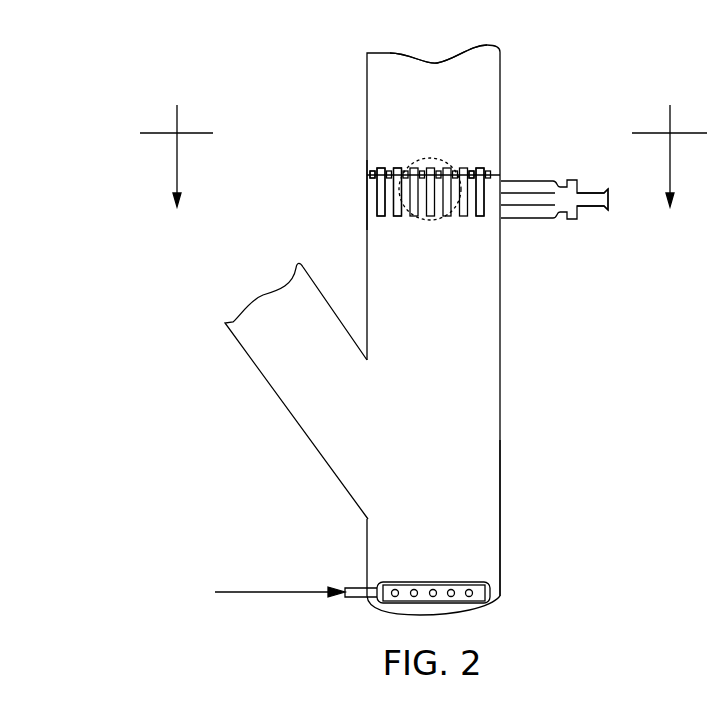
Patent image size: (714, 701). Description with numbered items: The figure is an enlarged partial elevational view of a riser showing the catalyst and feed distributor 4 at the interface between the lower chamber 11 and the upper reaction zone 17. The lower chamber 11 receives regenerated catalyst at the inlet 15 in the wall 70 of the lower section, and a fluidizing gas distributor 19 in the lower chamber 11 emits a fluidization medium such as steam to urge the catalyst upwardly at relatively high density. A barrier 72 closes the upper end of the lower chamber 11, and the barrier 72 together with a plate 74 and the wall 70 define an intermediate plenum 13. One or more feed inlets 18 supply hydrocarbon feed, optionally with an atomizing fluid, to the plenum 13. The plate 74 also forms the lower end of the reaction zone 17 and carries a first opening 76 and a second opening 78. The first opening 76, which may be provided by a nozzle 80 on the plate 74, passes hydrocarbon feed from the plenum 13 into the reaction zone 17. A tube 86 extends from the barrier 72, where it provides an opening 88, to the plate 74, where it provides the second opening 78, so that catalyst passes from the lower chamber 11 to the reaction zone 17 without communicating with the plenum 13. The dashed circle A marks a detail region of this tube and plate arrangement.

The catalyst and feed distributor 4 is at (682, 267).
The lower chamber 11 is at (465, 437).
The intermediate plenum 13 is at (378, 192).
The inlet 15 is at (378, 431).
The upper reaction zone 17 is at (467, 73).
The feed inlet 18 is at (500, 208).
The fluidizing gas distributor 19 is at (490, 583).
The wall 70 is at (501, 505).
The barrier 72 is at (379, 215).
The plate 74 is at (502, 181).
The first opening 76 is at (371, 172).
The second opening 78 is at (372, 168).
The nozzle 80 is at (369, 177).
The tube 86 is at (381, 168).
The opening 88 is at (399, 218).
The detail region A is at (433, 221).